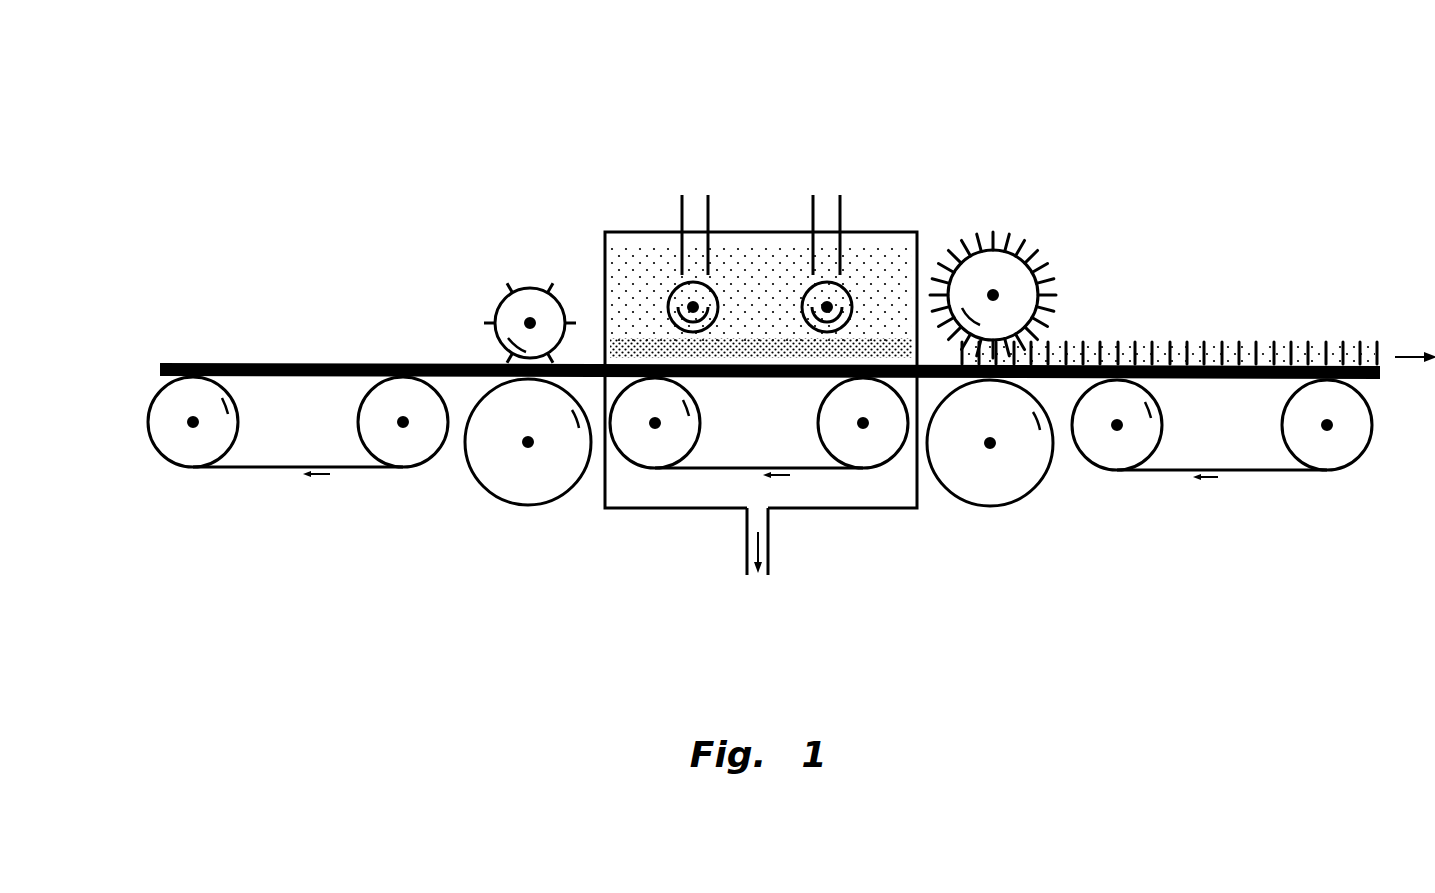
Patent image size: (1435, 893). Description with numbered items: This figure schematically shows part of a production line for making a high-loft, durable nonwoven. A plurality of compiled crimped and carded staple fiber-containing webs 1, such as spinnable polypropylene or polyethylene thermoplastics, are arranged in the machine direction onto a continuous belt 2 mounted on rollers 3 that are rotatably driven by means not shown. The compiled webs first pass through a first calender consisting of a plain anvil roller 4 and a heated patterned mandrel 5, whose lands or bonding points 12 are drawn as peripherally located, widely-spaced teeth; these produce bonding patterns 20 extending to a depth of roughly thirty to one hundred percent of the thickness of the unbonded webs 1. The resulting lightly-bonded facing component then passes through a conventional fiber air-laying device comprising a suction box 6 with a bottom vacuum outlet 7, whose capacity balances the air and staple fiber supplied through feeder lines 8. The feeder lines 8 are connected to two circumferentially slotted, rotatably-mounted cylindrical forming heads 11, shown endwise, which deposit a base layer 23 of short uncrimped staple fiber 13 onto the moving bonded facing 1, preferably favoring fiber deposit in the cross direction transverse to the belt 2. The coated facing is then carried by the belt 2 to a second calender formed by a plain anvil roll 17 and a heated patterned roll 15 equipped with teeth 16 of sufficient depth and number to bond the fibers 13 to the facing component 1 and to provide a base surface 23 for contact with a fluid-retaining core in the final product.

The facing webs 1 is at (237, 362).
The continuous belt 2 is at (285, 467).
The rollers 3 is at (185, 450).
The plain anvil roller 4 is at (528, 505).
The heated patterned mandrel 5 is at (530, 307).
The suction box 6 is at (910, 230).
The bottom vacuum outlet 7 is at (770, 562).
The feeder lines 8 is at (694, 213).
The forming heads 11 is at (677, 293).
The lands or bonding points 12 is at (495, 322).
The uncrimped staple fiber 13 is at (790, 328).
The heated patterned roll 15 is at (1010, 262).
The teeth 16 is at (1052, 272).
The plain anvil roll 17 is at (993, 507).
The bonding patterns 20 is at (1308, 345).
The base layer 23 is at (1210, 345).